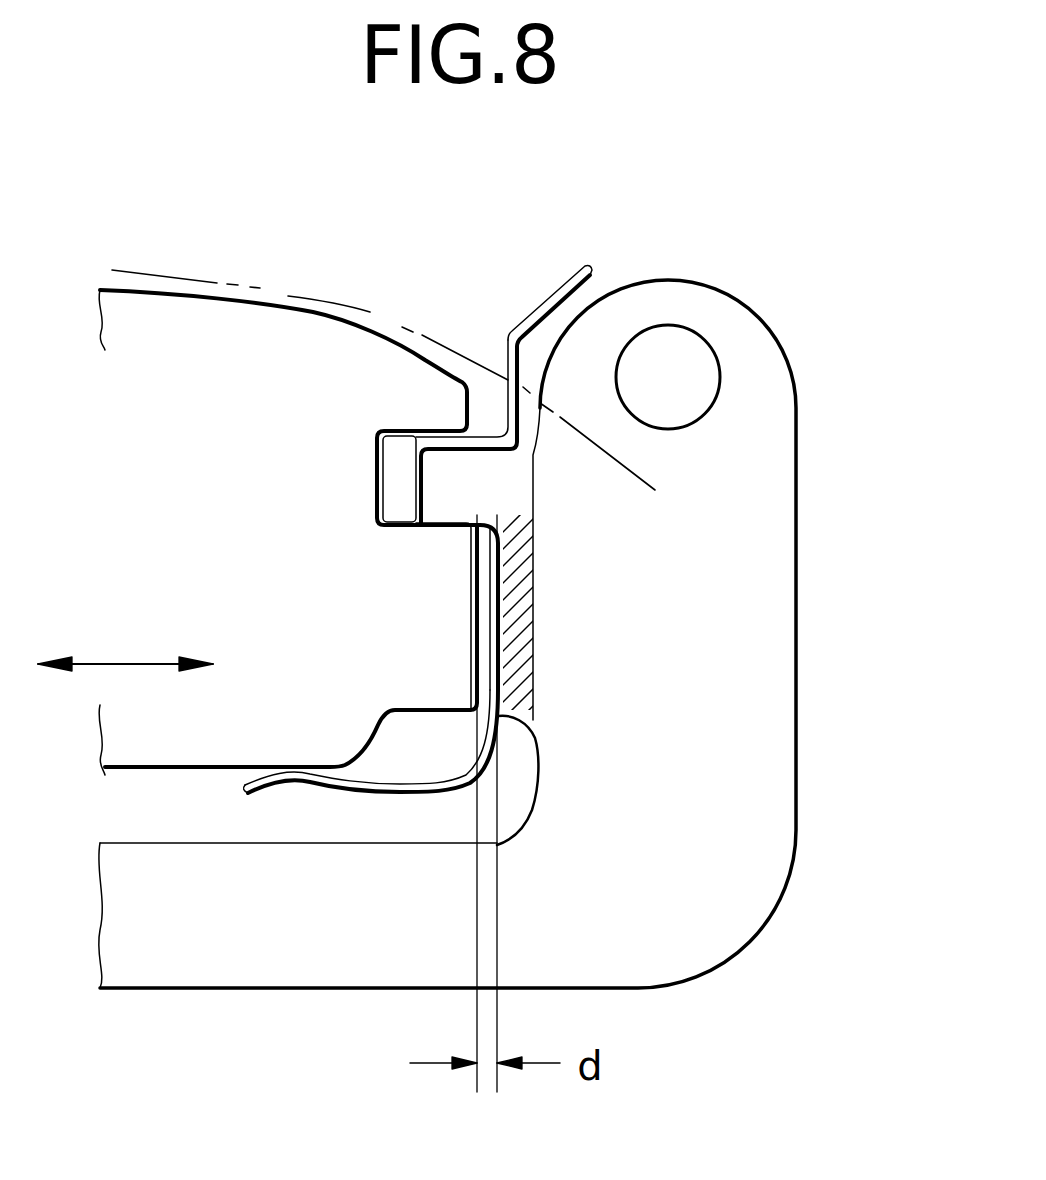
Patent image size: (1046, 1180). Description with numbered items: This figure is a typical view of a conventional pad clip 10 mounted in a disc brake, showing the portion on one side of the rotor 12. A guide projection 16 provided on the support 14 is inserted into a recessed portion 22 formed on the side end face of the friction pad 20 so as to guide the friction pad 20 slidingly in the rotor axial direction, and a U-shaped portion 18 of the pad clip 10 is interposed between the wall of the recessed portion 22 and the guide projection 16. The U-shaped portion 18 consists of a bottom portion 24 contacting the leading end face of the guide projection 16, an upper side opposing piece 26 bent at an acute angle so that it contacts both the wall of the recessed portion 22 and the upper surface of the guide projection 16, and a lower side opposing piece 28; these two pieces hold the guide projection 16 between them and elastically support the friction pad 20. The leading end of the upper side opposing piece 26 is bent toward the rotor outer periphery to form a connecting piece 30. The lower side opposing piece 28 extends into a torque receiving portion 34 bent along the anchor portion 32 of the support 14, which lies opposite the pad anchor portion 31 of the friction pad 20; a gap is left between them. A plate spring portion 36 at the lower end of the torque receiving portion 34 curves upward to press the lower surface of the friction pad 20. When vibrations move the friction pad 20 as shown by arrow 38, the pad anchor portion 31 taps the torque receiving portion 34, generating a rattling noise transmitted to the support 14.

The pad clip 10 is at (525, 283).
The rotor 12 is at (182, 268).
The support 14 is at (800, 482).
The guide projection 16 is at (420, 471).
The U-shaped portion 18 is at (437, 532).
The friction pad 20 is at (272, 297).
The recessed portion 22 is at (383, 503).
The bottom portion 24 is at (427, 490).
The upper side opposing piece 26 is at (437, 428).
The lower side opposing piece 28 is at (470, 520).
The connecting piece 30 is at (563, 312).
The pad anchor portion 31 is at (480, 623).
The anchor portion 32 is at (534, 640).
The torque receiving portion 34 is at (492, 677).
The plate spring portion 36 is at (370, 793).
The arrow 38 is at (110, 660).